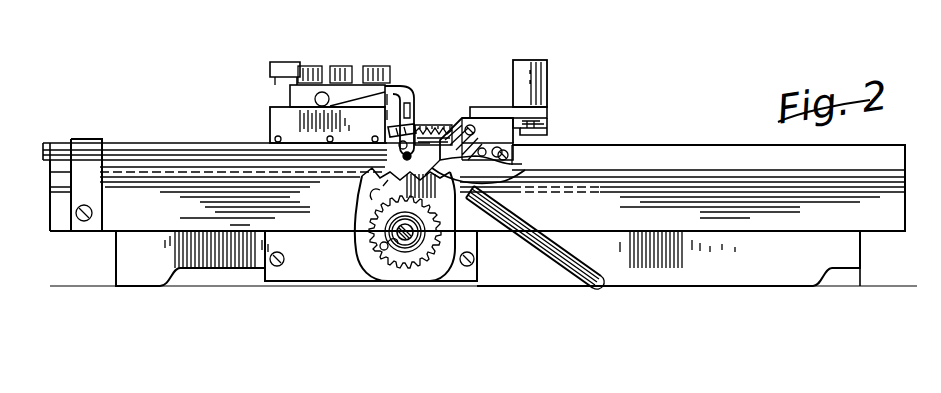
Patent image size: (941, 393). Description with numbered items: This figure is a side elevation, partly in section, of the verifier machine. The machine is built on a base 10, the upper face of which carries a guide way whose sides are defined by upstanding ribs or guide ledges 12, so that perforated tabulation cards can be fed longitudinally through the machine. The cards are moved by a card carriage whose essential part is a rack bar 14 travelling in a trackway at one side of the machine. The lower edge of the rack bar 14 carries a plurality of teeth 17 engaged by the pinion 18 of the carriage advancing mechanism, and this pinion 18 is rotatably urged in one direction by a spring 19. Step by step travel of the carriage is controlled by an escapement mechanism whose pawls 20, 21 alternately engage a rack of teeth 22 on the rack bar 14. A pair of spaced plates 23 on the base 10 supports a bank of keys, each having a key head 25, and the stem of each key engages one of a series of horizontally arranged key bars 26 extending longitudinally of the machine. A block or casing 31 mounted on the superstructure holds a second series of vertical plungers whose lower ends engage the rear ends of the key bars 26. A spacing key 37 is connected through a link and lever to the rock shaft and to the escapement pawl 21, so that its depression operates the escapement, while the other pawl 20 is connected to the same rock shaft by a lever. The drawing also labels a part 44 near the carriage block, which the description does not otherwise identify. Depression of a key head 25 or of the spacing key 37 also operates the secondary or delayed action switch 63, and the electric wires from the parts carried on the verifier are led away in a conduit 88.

The base 10 is at (130, 256).
The guide ledges 12 is at (743, 144).
The rack bar 14 is at (468, 240).
The teeth 17 is at (356, 232).
The pinion 18 is at (392, 258).
The spring 19 is at (527, 281).
The escapement pawl 20 is at (416, 122).
The escapement pawl 21 is at (505, 176).
The rack of teeth 22 is at (452, 120).
The spaced plates 23 is at (579, 0).
The key head 25 is at (350, 67).
The key bars 26 is at (546, 127).
The block or casing 31 is at (530, 79).
The spacing key 37 is at (282, 68).
The bracket arm 44 is at (376, 68).
The secondary or delayed action switch 63 is at (283, 118).
The conduit 88 is at (211, 150).